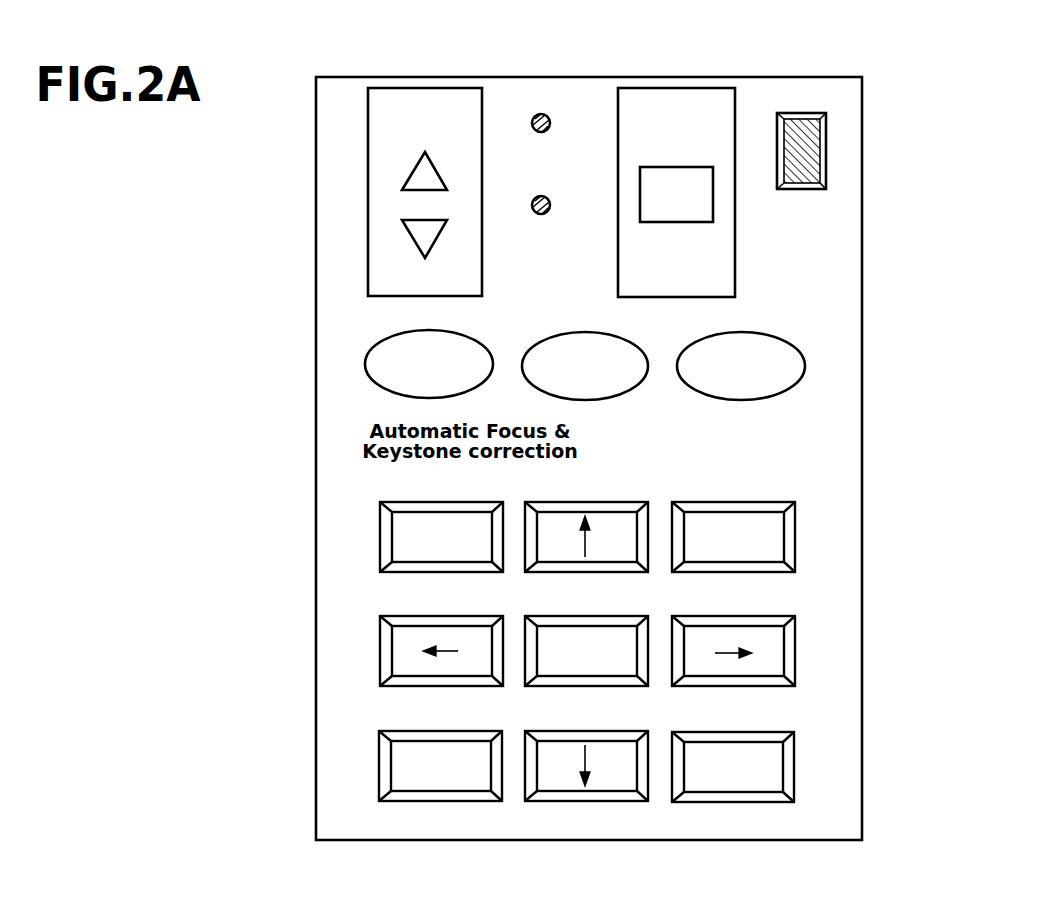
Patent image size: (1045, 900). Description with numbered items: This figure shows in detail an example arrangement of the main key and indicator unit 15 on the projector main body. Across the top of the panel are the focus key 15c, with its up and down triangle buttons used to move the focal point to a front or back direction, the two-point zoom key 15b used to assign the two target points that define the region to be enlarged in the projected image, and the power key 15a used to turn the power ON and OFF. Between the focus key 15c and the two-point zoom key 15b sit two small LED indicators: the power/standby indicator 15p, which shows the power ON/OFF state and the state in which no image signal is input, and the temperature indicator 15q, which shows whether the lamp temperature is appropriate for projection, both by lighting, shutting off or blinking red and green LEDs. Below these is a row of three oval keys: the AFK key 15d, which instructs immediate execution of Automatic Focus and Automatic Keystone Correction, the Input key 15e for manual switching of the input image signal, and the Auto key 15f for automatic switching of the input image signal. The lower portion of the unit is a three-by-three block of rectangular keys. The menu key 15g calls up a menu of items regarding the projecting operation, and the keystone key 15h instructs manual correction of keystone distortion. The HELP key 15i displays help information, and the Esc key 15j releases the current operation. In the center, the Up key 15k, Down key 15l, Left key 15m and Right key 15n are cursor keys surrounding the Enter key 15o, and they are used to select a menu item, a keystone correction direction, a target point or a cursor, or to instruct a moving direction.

The main key and indicator unit 15 is at (862, 113).
The power key 15a is at (795, 113).
The two-point zoom key 15b is at (700, 88).
The focus key 15c is at (452, 88).
The AFK key 15d is at (370, 342).
The Input key 15e is at (547, 340).
The Auto key 15f is at (797, 343).
The menu key 15g is at (380, 531).
The keystone key 15h is at (795, 537).
The HELP key 15i is at (379, 757).
The Esc key 15j is at (794, 767).
The Up key 15k is at (563, 502).
The Down key 15l is at (563, 731).
The Left key 15m is at (380, 643).
The Right key 15n is at (795, 650).
The Enter key 15o is at (563, 616).
The power/standby indicator 15p is at (541, 113).
The temperature indicator 15q is at (551, 205).